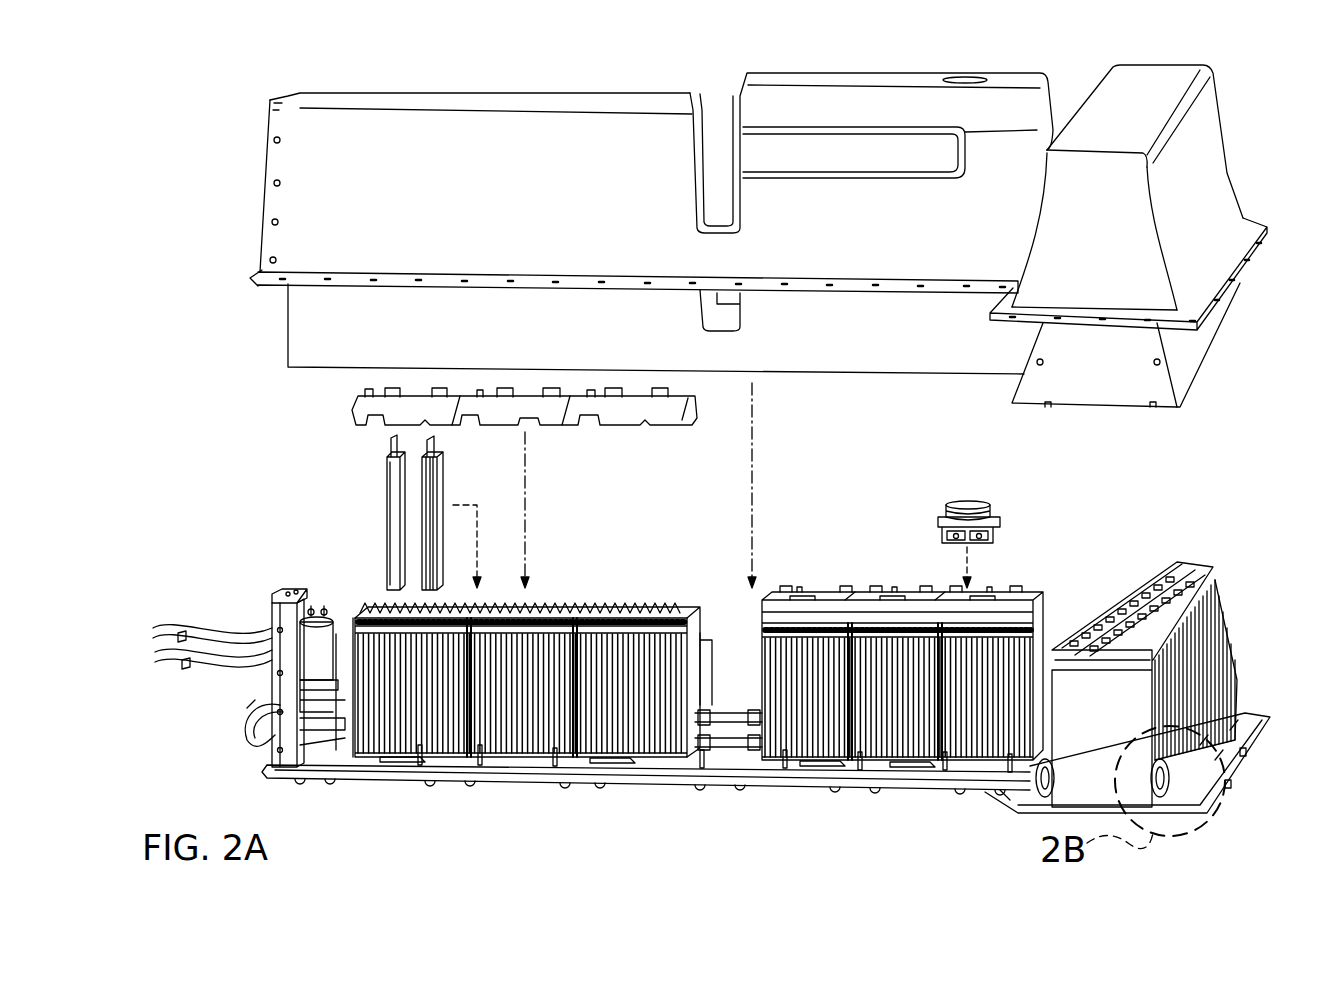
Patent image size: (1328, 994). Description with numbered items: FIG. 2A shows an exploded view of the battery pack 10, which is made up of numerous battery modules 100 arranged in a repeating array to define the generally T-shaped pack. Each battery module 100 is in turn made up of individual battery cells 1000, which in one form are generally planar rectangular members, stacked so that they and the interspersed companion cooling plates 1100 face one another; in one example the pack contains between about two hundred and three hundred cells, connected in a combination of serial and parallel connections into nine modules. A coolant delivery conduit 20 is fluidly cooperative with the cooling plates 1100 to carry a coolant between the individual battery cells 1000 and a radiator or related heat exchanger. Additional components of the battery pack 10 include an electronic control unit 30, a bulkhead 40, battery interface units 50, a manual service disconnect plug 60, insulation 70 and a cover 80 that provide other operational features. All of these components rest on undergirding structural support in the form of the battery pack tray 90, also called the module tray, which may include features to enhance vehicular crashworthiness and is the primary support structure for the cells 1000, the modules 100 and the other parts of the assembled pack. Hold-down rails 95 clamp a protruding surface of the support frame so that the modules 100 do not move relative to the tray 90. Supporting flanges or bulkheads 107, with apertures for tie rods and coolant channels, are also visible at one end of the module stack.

The battery pack 10 is at (198, 126).
The cover 80 is at (263, 202).
The insulation 70 is at (288, 332).
The battery interface units 50 is at (350, 408).
The battery cells 1000 is at (387, 518).
The cooling plates 1100 is at (438, 487).
The manual service disconnect plug 60 is at (970, 502).
The bulkhead 40 is at (278, 597).
The electronic control unit 30 is at (347, 697).
The coolant delivery conduit 20 is at (733, 717).
The hold-down rails 95 is at (632, 773).
The battery pack tray 90 is at (950, 783).
The battery modules 100 is at (715, 832).
The supporting flanges or bulkheads 107 is at (1227, 640).